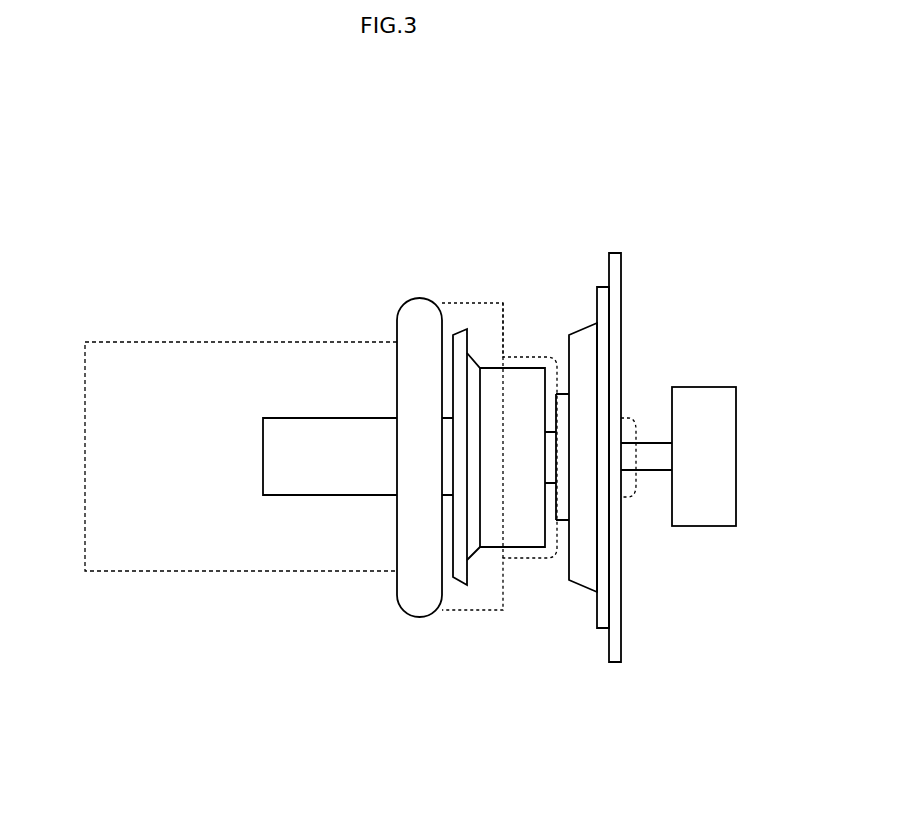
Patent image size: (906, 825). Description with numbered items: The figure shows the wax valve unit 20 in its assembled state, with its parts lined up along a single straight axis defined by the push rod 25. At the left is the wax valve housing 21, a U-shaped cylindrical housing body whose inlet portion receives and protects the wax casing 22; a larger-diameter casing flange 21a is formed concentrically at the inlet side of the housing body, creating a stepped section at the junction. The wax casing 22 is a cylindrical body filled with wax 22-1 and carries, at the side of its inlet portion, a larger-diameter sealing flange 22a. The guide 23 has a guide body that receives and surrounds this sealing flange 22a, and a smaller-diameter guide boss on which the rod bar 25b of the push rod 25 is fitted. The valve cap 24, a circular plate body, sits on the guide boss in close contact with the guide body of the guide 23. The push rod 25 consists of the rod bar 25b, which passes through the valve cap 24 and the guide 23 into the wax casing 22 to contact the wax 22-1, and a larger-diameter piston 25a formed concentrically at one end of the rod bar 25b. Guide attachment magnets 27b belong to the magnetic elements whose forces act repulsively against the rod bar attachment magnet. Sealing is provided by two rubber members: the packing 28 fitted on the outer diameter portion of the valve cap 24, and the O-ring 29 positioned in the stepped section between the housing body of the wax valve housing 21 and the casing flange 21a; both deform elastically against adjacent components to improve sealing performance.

The wax valve unit 20 is at (95, 280).
The wax valve housing 21 is at (112, 547).
The casing flange 21a is at (503, 303).
The wax casing 22 is at (315, 487).
The wax 22-1 is at (292, 442).
The sealing flange 22a is at (470, 343).
The guide 23 is at (520, 533).
The valve cap 24 is at (593, 338).
The push rod 25 is at (706, 547).
The piston 25a is at (712, 507).
The rod bar 25b is at (655, 460).
The guide attachment magnets 27b is at (573, 462).
The packing 28 is at (620, 365).
The O-ring 29 is at (412, 313).